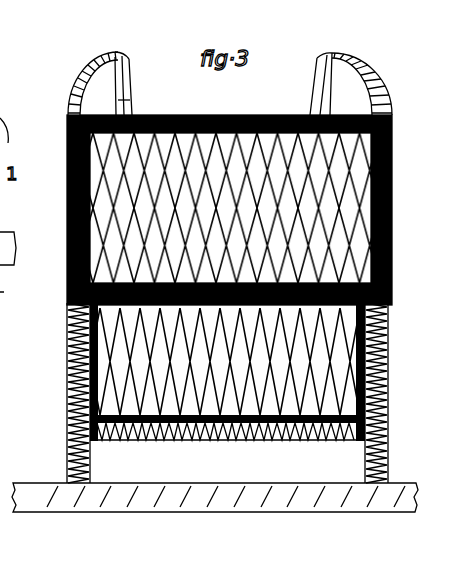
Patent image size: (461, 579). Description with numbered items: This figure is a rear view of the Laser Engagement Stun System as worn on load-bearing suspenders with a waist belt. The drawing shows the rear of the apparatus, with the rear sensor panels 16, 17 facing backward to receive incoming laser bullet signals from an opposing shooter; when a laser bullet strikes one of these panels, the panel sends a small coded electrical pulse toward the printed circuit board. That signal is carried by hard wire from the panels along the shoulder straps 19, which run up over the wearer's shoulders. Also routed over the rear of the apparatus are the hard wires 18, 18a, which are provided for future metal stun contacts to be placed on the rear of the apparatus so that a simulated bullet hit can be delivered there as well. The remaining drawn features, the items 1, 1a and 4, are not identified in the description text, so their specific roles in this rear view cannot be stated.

The spring leg 1 is at (396, 416).
The base plate 1a is at (358, 513).
The frame 4 is at (401, 237).
The rear sensor panel 16 is at (346, 171).
The rear sensor panel 17 is at (120, 375).
The hard wire 18 is at (310, 92).
The hard wire 18a is at (135, 85).
The shoulder strap 19 is at (138, 100).